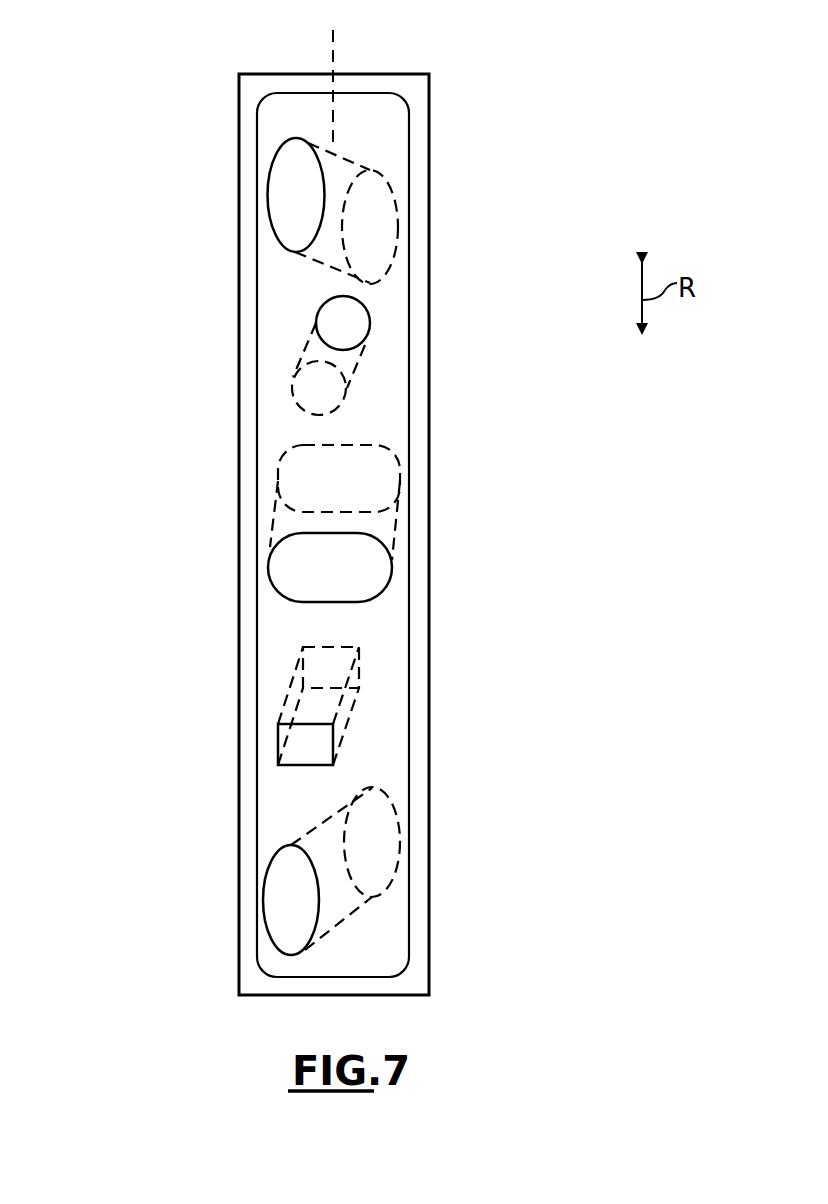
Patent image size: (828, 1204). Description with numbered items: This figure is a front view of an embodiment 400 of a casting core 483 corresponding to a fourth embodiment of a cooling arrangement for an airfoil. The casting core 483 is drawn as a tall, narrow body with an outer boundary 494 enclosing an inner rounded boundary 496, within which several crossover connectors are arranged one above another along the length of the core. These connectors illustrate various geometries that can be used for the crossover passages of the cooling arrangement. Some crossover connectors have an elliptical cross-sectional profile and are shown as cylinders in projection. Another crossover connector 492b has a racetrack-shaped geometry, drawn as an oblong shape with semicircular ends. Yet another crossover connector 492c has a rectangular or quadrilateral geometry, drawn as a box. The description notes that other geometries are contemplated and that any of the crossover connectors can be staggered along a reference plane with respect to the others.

The embodiment 400 is at (138, 58).
The casting core 483 is at (175, 168).
The outer frame 494 is at (239, 886).
The inner recess wall 496 is at (258, 810).
The crossover connector 492b is at (396, 527).
The crossover connector 492c is at (352, 705).